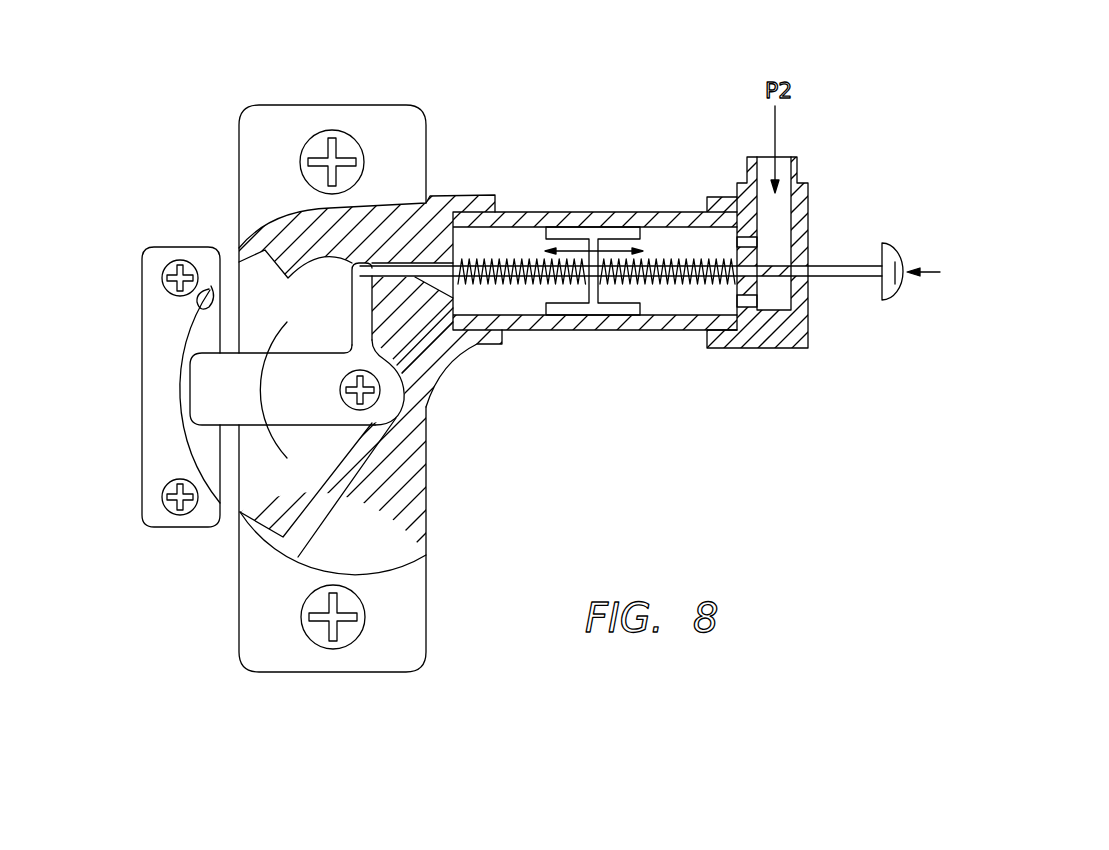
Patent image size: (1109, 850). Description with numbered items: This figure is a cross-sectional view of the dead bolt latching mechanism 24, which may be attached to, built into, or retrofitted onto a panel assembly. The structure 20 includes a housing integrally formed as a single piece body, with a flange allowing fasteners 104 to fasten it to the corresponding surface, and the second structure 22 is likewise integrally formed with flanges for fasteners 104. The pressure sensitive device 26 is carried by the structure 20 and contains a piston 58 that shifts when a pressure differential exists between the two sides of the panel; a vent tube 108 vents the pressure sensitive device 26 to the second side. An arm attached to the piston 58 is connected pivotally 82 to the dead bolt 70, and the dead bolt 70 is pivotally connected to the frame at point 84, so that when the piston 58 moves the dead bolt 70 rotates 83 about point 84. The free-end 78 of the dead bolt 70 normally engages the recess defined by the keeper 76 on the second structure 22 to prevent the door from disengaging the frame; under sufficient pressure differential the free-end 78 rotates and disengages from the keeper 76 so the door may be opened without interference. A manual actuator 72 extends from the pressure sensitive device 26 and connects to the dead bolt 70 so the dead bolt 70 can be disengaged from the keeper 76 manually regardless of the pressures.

The structure 20 is at (507, 389).
The second structure 22 is at (112, 430).
The dead bolt latching mechanism 24 is at (127, 80).
The pressure sensitive device 26 is at (604, 208).
The piston 58 is at (597, 295).
The dead bolt 70 is at (323, 427).
The manual actuator 72 is at (882, 290).
The keeper 76 is at (211, 286).
The free-end 78 is at (207, 393).
The pivotal connection 82 is at (358, 281).
The rotation 83 is at (268, 432).
The pivot point 84 is at (378, 391).
The fasteners 104 is at (180, 497).
The vent tube 108 is at (766, 157).